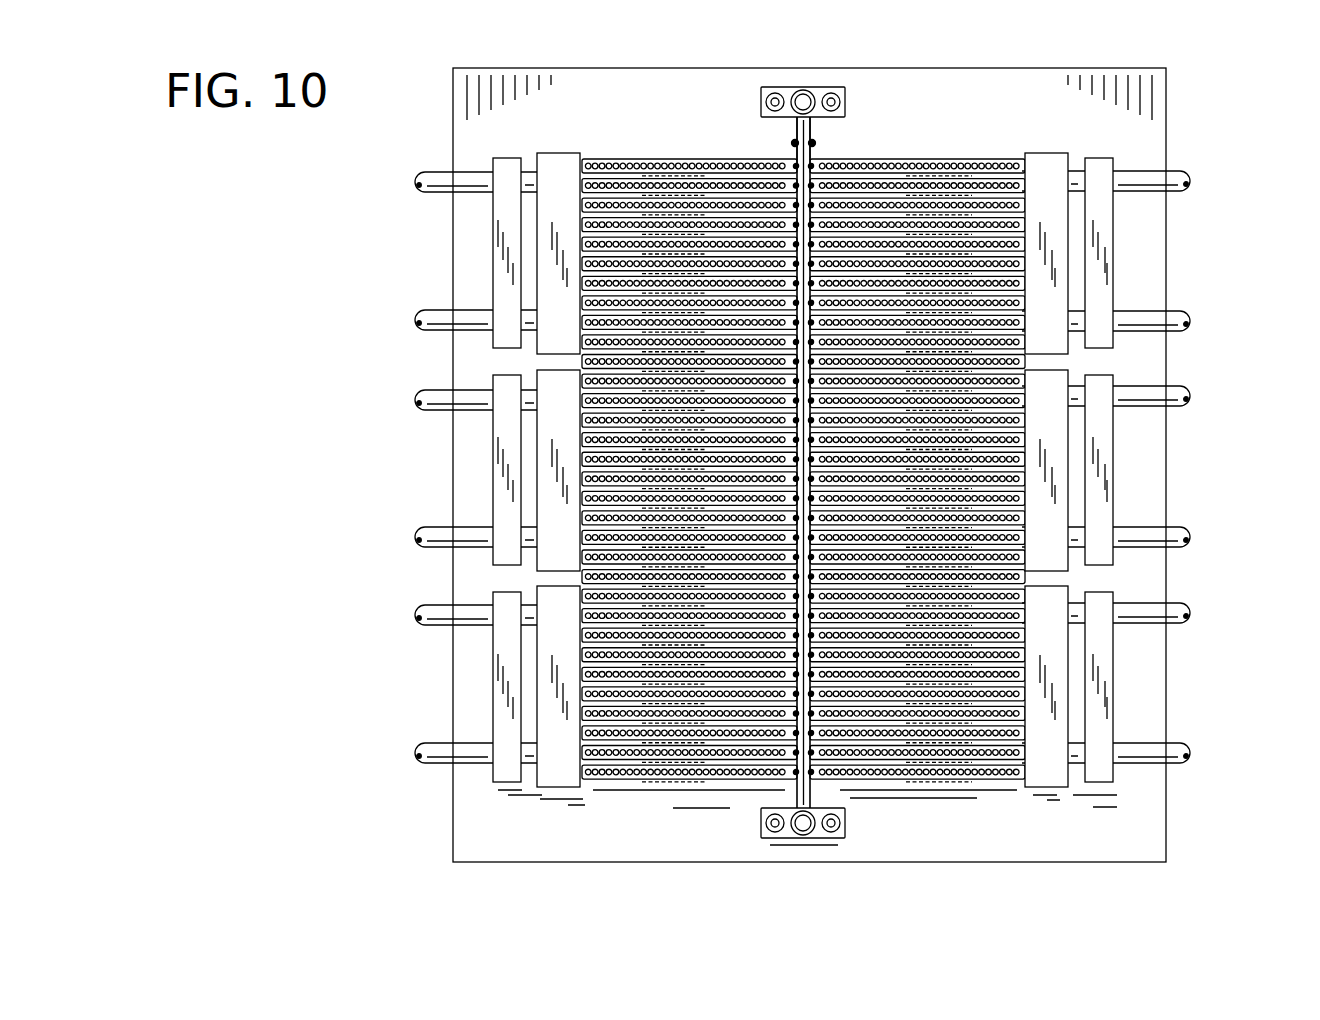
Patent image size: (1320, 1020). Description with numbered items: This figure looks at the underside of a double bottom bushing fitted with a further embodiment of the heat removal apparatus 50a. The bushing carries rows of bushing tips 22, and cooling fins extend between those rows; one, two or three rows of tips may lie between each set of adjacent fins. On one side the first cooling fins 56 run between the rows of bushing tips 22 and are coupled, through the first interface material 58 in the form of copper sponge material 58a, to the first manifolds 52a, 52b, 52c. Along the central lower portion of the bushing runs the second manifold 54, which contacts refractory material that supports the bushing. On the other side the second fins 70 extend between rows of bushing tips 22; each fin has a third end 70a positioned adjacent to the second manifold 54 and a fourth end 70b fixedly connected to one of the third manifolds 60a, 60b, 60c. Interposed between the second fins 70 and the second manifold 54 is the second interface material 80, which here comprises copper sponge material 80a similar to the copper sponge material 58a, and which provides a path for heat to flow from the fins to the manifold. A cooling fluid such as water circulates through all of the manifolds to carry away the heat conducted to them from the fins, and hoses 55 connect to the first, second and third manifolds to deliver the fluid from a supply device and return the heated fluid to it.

The heat removal apparatus 50a is at (1097, 100).
The bushing tips 22 is at (825, 426).
The second fins 70 is at (825, 426).
The third end 70a is at (839, 121).
The fourth end 70b is at (1020, 166).
The second interface material 80 is at (858, 430).
The copper sponge material 80a is at (816, 143).
The copper sponge material 58a is at (794, 143).
The first interface material 58 is at (760, 810).
The second manifold 54 is at (785, 785).
The first cooling fins 56 is at (648, 782).
The hoses 55 is at (433, 190).
The first manifold 52a is at (548, 256).
The first manifold 52b is at (548, 462).
The first manifold 52c is at (548, 684).
The third manifold 60a is at (1053, 262).
The third manifold 60b is at (1053, 470).
The third manifold 60c is at (1053, 700).